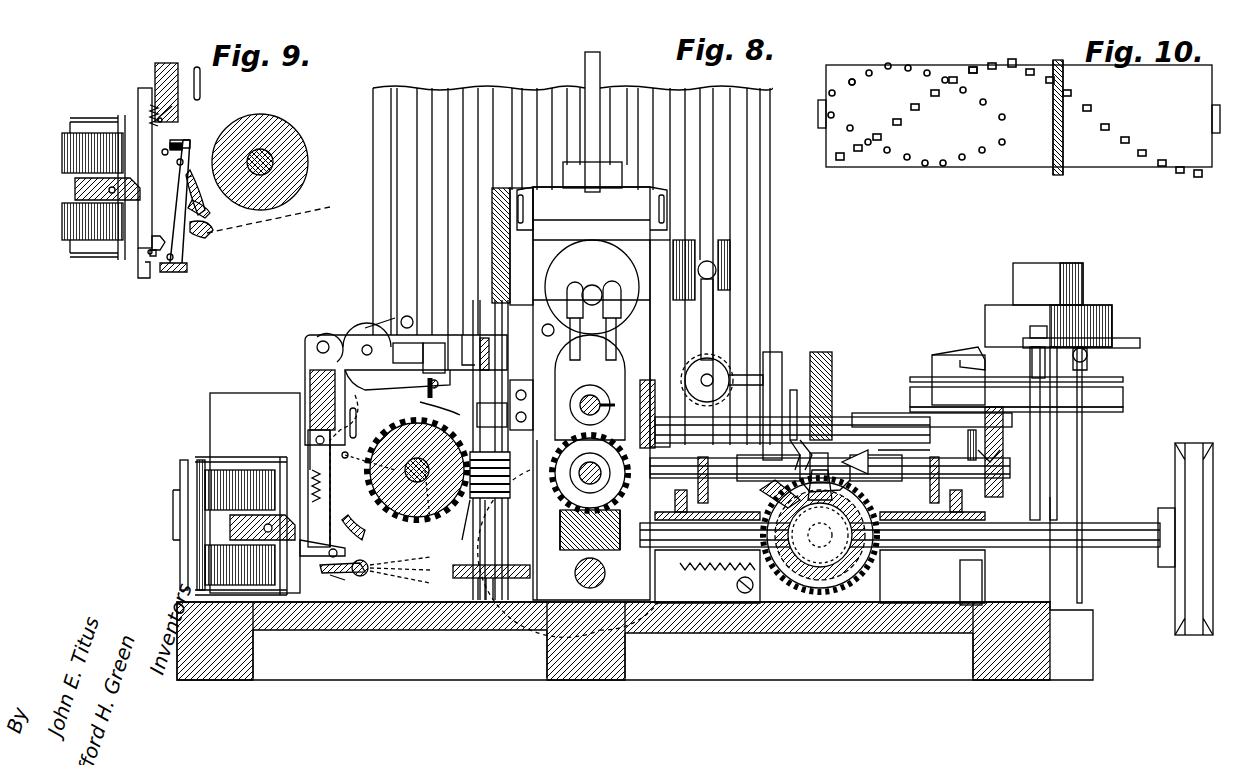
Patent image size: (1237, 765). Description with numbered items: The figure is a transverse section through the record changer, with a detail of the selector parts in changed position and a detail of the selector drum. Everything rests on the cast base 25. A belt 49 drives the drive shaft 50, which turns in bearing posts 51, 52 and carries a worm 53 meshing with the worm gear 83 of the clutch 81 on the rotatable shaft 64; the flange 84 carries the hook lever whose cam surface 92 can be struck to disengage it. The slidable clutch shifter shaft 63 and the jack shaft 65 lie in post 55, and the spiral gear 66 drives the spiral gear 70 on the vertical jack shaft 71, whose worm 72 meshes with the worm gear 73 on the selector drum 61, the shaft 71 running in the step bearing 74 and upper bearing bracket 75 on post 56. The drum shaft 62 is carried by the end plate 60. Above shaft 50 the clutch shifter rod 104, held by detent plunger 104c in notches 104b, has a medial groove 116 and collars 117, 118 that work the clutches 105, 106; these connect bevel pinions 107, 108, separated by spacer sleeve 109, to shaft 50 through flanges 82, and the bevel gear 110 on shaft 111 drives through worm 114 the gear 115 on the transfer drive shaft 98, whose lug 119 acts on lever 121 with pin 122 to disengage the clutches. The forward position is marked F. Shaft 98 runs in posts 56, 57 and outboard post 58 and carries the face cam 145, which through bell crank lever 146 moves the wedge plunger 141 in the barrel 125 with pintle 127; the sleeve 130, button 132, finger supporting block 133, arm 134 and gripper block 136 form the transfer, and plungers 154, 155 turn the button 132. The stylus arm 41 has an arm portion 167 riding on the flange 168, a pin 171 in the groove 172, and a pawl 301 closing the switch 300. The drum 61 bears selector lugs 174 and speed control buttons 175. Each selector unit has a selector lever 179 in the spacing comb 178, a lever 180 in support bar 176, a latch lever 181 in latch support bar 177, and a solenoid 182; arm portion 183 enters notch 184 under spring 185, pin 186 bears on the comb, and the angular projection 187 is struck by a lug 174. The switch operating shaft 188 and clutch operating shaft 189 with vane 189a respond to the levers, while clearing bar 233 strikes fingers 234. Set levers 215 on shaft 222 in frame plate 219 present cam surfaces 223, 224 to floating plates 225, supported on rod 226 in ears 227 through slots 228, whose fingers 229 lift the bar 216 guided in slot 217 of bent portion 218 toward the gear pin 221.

In FIG. 8, the cast base 25 is at (1026, 680).
In FIG. 8, the stylus arm 41 is at (1084, 280).
In FIG. 8, the belt 49 is at (1192, 632).
In FIG. 8, the drive shaft 50 is at (1112, 528).
In FIG. 8, the bearing post 51 is at (652, 414).
In FIG. 8, the bearing post 52 is at (1005, 452).
In FIG. 8, the worm 53 is at (586, 549).
In FIG. 8, the bearing post 55 is at (537, 605).
In FIG. 8, the transfer shaft bearing post 56 is at (587, 393).
In FIG. 8, the transfer shaft bearing post 57 is at (660, 275).
In FIG. 8, the outboard bearing post 58 is at (1045, 445).
In FIG. 8, the end plate 60 is at (243, 393).
In FIG. 9, the selector drum 61 is at (292, 130).
In FIG. 10, the selector drum 61 is at (832, 85).
In FIG. 8, the selector drum 61 is at (437, 520).
In FIG. 9, the drum shaft 62 is at (274, 160).
In FIG. 8, the drum shaft 62 is at (417, 503).
In FIG. 8, the clutch shifter shaft 63 is at (604, 398).
In FIG. 8, the rotatable shaft 64 is at (560, 475).
In FIG. 8, the selector and magazine drive jack shaft 65 is at (548, 588).
In FIG. 8, the spiral gear 66 is at (640, 640).
In FIG. 8, the spiral gear 70 is at (478, 605).
In FIG. 8, the vertical jack shaft 71 is at (492, 522).
In FIG. 8, the worm 72 is at (500, 450).
In FIG. 8, the worm gear 73 is at (463, 520).
In FIG. 8, the step bearing 74 is at (486, 605).
In FIG. 8, the upper bearing bracket 75 is at (505, 405).
In FIG. 8, the clutch 81 is at (541, 477).
In FIG. 8, the flange 82 is at (827, 494).
In FIG. 8, the worm gear 83 is at (578, 458).
In FIG. 8, the flange 84 is at (893, 518).
In FIG. 8, the cam surface 92 is at (944, 483).
In FIG. 8, the transfer drive shaft 98 is at (898, 418).
In FIG. 8, the clutch shifter rod 104 is at (830, 468).
In FIG. 8, the notches 104b is at (970, 455).
In FIG. 8, the detent plunger 104c is at (980, 465).
In FIG. 8, the clutch mechanism 105 is at (935, 596).
In FIG. 8, the clutch mechanism 106 is at (715, 596).
In FIG. 8, the bevel pinion 107 is at (825, 538).
In FIG. 8, the bevel pinion 108 is at (802, 544).
In FIG. 8, the spacer sleeve 109 is at (834, 501).
In FIG. 8, the bevel gear 110 is at (866, 580).
In FIG. 8, the shaft 111 is at (820, 539).
In FIG. 8, the worm 114 is at (820, 589).
In FIG. 8, the gear 115 is at (820, 352).
In FIG. 8, the medial groove 116 is at (781, 494).
In FIG. 8, the flange collar portion 117 is at (915, 455).
In FIG. 8, the flange collar portion 118 is at (755, 450).
In FIG. 8, the lug 119 is at (830, 445).
In FIG. 8, the lever 121 is at (862, 451).
In FIG. 8, the pin 122 is at (822, 486).
In FIG. 8, the barrel 125 is at (561, 245).
In FIG. 8, the pintle 127 is at (598, 290).
In FIG. 8, the sleeve 130 is at (798, 407).
In FIG. 8, the button 132 is at (592, 287).
In FIG. 8, the finger supporting block 133 is at (610, 180).
In FIG. 8, the arm 134 is at (600, 56).
In FIG. 8, the gripper block 136 is at (592, 196).
In FIG. 8, the wedge plunger 141 is at (716, 268).
In FIG. 8, the face cam 145 is at (775, 352).
In FIG. 8, the bell crank lever 146 is at (710, 315).
In FIG. 8, the plunger 154 is at (568, 340).
In FIG. 8, the plunger 155 is at (617, 340).
In FIG. 8, the arm portion 167 is at (1122, 338).
In FIG. 8, the flange 168 is at (1060, 500).
In FIG. 8, the pin 171 is at (1030, 348).
In FIG. 8, the groove 172 is at (1040, 475).
In FIG. 9, the selector lug 174 is at (187, 196).
In FIG. 10, the selector lug 174 is at (1013, 58).
In FIG. 8, the selector lug 174 is at (356, 470).
In FIG. 9, the playing speed control button 175 is at (183, 150).
In FIG. 10, the playing speed control button 175 is at (889, 64).
In FIG. 8, the playing speed control button 175 is at (432, 560).
In FIG. 9, the selector lever support bar 176 is at (94, 197).
In FIG. 8, the selector lever support bar 176 is at (228, 527).
In FIG. 9, the selector latch support bar 177 is at (158, 70).
In FIG. 8, the selector latch support bar 177 is at (320, 375).
In FIG. 8, the selector lever spacing comb 178 is at (417, 470).
In FIG. 9, the selector lever 179 is at (183, 164).
In FIG. 8, the selector lever 179 is at (348, 495).
In FIG. 8, the lever 180 is at (348, 553).
In FIG. 9, the latch lever 181 is at (140, 115).
In FIG. 8, the latch lever 181 is at (305, 437).
In FIG. 9, the solenoid 182 is at (93, 187).
In FIG. 8, the solenoid 182 is at (218, 480).
In FIG. 9, the arm portion 183 is at (148, 253).
In FIG. 9, the notch 184 is at (158, 252).
In FIG. 9, the spring 185 is at (155, 138).
In FIG. 9, the pin 186 is at (204, 192).
In FIG. 9, the angular projection 187 is at (175, 121).
In FIG. 9, the starting switch operating shaft 188 is at (213, 232).
In FIG. 8, the starting switch operating shaft 188 is at (371, 529).
In FIG. 9, the clutch operating shaft 189 is at (213, 236).
In FIG. 8, the clutch operating shaft 189 is at (363, 575).
In FIG. 9, the vane 189a is at (180, 262).
In FIG. 8, the vane 189a is at (335, 585).
In FIG. 8, the set lever 215 is at (402, 318).
In FIG. 8, the bar 216 is at (468, 345).
In FIG. 8, the slot 217 is at (484, 338).
In FIG. 8, the downwardly bent portion 218 is at (448, 335).
In FIG. 8, the frame plate 219 is at (310, 335).
In FIG. 8, the pin 221 is at (520, 235).
In FIG. 8, the shaft 222 is at (365, 345).
In FIG. 8, the cam surface 223 is at (408, 353).
In FIG. 8, the cam surface 224 is at (325, 341).
In FIG. 8, the floating plate 225 is at (397, 378).
In FIG. 8, the rod 226 is at (428, 390).
In FIG. 8, the ear 227 is at (436, 358).
In FIG. 8, the slot 228 is at (430, 406).
In FIG. 8, the finger 229 is at (545, 335).
In FIG. 9, the clearing bar 233 is at (199, 98).
In FIG. 8, the clearing bar 233 is at (371, 423).
In FIG. 8, the finger 234 is at (312, 440).
In FIG. 8, the switch 300 is at (968, 352).
In FIG. 8, the pawl 301 is at (1090, 362).
In FIG. 9, the forward position F is at (275, 216).
In FIG. 8, the forward position F is at (406, 569).